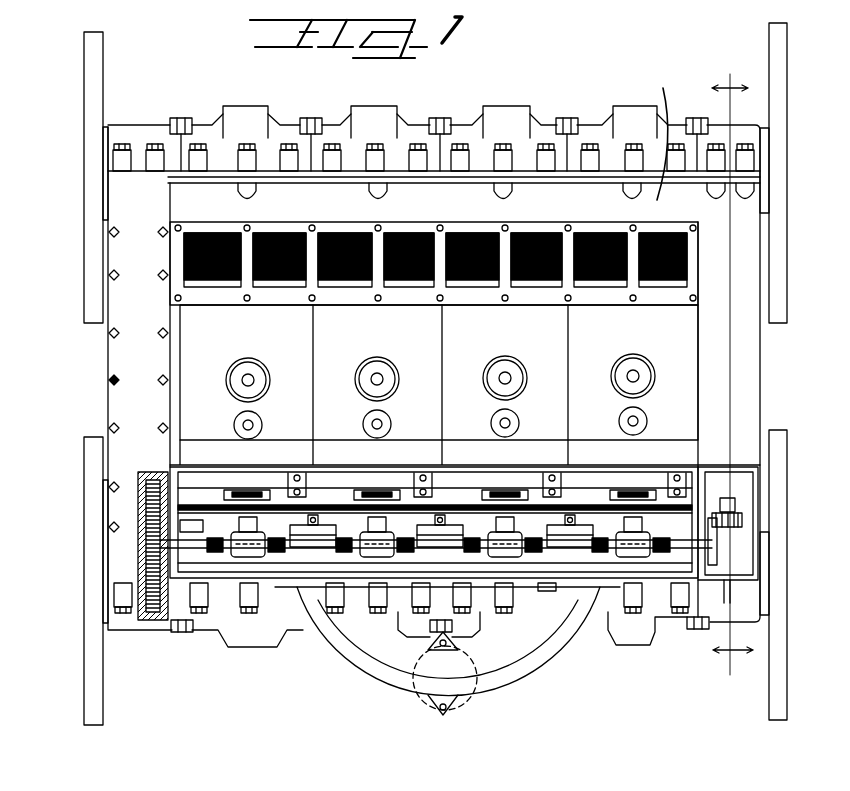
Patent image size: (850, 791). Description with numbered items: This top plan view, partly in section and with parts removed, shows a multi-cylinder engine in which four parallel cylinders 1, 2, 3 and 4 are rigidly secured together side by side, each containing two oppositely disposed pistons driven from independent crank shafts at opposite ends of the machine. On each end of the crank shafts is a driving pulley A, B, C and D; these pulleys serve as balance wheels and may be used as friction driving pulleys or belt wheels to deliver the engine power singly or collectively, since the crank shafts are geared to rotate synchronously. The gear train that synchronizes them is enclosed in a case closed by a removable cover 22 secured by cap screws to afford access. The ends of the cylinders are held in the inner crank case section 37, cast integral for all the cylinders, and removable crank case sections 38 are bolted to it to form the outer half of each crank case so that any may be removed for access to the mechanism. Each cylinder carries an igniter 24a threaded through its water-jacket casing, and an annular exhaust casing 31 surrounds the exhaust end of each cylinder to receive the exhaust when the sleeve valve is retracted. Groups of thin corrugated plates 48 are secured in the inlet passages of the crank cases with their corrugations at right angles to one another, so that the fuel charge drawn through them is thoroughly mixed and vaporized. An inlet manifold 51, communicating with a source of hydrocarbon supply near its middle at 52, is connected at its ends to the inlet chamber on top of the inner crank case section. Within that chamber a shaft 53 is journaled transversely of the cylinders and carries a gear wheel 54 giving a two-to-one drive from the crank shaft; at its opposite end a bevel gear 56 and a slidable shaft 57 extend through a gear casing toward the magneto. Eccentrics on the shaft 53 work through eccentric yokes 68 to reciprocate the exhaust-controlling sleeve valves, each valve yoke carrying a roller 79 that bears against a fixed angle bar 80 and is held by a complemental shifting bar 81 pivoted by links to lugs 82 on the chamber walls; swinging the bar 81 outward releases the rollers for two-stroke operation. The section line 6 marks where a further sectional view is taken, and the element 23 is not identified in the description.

The cylinder 1 is at (629, 330).
The cylinder 2 is at (527, 335).
The cylinder 3 is at (397, 335).
The cylinder 4 is at (269, 335).
The section line 6 is at (732, 377).
The removable cover 22 is at (125, 352).
The fastening bolt 23 is at (110, 380).
The igniter 24a is at (246, 379).
The annular exhaust casing 31 is at (597, 450).
The inner crank case section 37 is at (656, 132).
The removable crank case section 38 is at (357, 116).
The corrugated mixing plate 48 is at (385, 225).
The inlet manifold 51 is at (350, 640).
The hydro-carbon supply connection 52 is at (455, 693).
The shaft 53 is at (670, 552).
The gear wheel 54 is at (157, 612).
The bevel gear 56 is at (692, 548).
The shaft 57 is at (730, 447).
The eccentric yoke 68 is at (250, 548).
The roller 79 is at (627, 500).
The angle bar 80 is at (213, 507).
The complemental bar 81 is at (205, 490).
The lug 82 is at (549, 470).
The driving pulley A is at (777, 133).
The driving pulley B is at (90, 77).
The driving pulley C is at (103, 482).
The driving pulley D is at (777, 482).